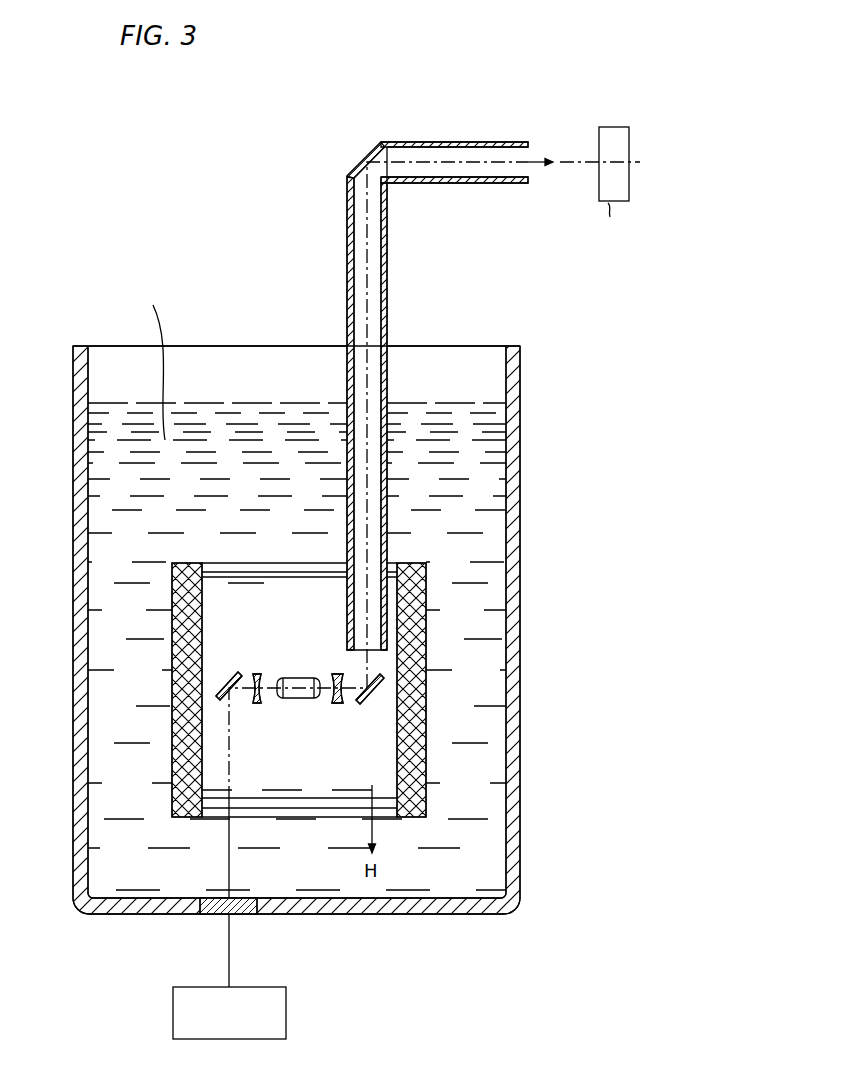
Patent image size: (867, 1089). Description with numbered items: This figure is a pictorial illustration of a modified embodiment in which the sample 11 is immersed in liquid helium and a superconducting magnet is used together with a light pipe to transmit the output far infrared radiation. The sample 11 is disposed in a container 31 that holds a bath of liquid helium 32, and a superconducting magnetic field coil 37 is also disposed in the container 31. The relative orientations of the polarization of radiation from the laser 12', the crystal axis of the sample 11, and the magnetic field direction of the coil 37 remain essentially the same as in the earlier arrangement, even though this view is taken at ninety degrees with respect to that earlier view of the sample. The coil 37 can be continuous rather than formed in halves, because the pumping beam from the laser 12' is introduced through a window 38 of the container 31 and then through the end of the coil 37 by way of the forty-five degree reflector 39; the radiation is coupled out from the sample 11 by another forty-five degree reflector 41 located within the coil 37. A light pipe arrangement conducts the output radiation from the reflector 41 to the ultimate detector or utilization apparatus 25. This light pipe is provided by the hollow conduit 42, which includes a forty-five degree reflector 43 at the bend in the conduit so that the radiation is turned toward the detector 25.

The sample 11 is at (301, 697).
The laser 12' is at (255, 1013).
The detector or utilization apparatus 25 is at (613, 126).
The container 31 is at (73, 509).
The liquid helium 32 is at (240, 411).
The superconducting magnetic field coil 37 is at (172, 737).
The window 38 is at (245, 915).
The 45° reflector 39 is at (226, 682).
The 45° reflector 41 is at (377, 698).
The hollow conduit 42 is at (388, 282).
The 45° reflector 43 is at (364, 157).